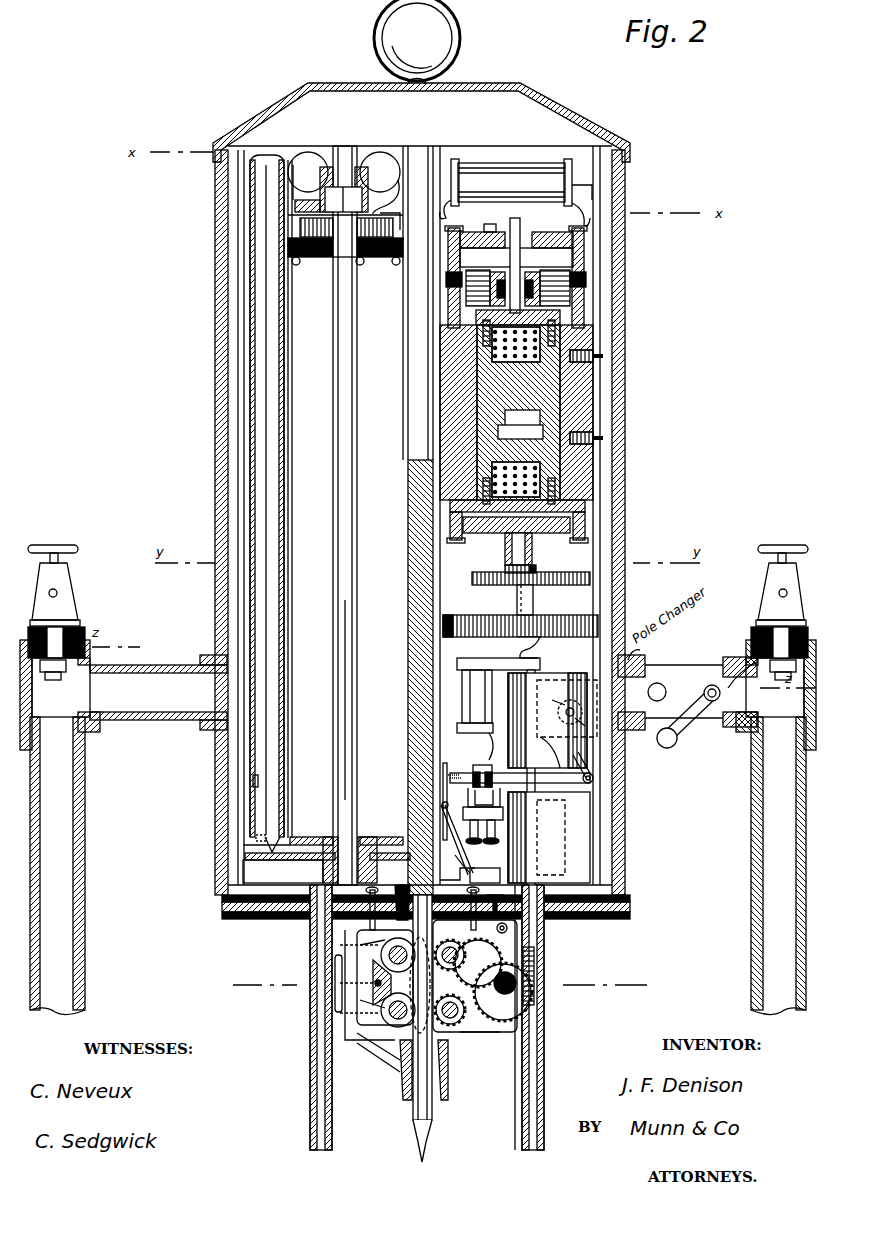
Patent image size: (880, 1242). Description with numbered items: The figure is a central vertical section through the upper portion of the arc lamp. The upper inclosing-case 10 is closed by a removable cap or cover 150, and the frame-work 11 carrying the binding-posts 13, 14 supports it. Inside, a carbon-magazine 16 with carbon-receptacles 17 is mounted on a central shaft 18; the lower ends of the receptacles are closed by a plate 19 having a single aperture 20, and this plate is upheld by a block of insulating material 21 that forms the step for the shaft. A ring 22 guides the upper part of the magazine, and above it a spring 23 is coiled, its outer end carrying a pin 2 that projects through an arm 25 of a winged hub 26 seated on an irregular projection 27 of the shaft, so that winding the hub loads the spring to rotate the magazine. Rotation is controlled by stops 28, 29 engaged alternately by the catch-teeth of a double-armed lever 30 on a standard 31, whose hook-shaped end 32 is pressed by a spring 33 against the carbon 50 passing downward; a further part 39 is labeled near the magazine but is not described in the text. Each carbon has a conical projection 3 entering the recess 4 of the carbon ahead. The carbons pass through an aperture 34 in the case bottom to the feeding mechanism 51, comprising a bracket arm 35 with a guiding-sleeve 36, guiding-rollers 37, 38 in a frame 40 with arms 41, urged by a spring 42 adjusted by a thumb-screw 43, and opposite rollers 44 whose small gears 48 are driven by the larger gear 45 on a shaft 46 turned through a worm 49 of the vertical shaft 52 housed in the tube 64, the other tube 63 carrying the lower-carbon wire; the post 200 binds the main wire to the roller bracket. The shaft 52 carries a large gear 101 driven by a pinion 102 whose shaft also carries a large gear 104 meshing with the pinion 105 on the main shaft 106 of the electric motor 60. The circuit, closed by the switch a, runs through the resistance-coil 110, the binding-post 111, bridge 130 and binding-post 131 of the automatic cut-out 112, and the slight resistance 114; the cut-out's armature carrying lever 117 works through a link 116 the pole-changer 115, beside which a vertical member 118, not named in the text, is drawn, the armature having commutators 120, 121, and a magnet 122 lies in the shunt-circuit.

The cap or cover 150 is at (411, 91).
The upper inclosing-case 10 is at (625, 302).
The carbon-magazine 16 is at (248, 404).
The recess 4 is at (268, 170).
The carbon-receptacles 17 is at (292, 482).
The central shaft 18 is at (367, 515).
The small gears 48 is at (343, 700).
The aperture 20 is at (380, 850).
The pin 2 is at (308, 176).
The winged hub 26 is at (380, 183).
The arm 25 is at (315, 200).
The projection 27 is at (344, 189).
The spring 23 is at (389, 213).
The binding-post 14 is at (364, 255).
The block of insulating material 21 is at (390, 257).
The resistance-coil 110 is at (516, 192).
The commutator 120 is at (516, 273).
The commutator 121 is at (518, 297).
The electric motor 60 is at (521, 412).
The pinion 105 is at (505, 568).
The main shaft of the motor 106 is at (537, 568).
The large gear 104 is at (478, 584).
The pinion 102 is at (517, 611).
The large gear 101 is at (483, 637).
The slight resistance 114 is at (475, 715).
The shaft 118 is at (527, 685).
The pole-changer 115 is at (575, 692).
The armature carrying lever 117 is at (520, 747).
The link 116 is at (572, 760).
The bridge 130 is at (493, 775).
The automatic cut-out 112 is at (483, 804).
The binding-post 131 is at (481, 840).
The binding-post 111 is at (500, 840).
The stop 29 is at (445, 765).
The spring 33 is at (461, 768).
The double-armed lever 30 is at (456, 797).
The standard 31 is at (489, 868).
The stop 28 is at (455, 862).
The hook-shaped end 32 is at (456, 873).
The magnet 122 is at (549, 837).
The projection 3 is at (326, 860).
The plate 19 is at (283, 848).
The ring 22 is at (256, 840).
The stop 39 is at (253, 778).
The carbon 50 is at (420, 811).
The aperture 34 is at (434, 911).
The vertical tube 63 is at (310, 1080).
The vertical tube 64 is at (545, 1082).
The vertical shaft 52 is at (538, 1046).
The thumb-screw 43 is at (360, 1032).
The arms 41 is at (372, 970).
The spring 42 is at (374, 980).
The guiding-roller 37 is at (398, 947).
The frame 40 is at (398, 1003).
The guiding-roller 38 is at (411, 986).
The rollers 44 is at (475, 984).
The larger gear 45 is at (478, 963).
The shaft 46 is at (503, 992).
The worm 49 is at (535, 960).
The post 200 is at (508, 928).
The bracket arm 35 is at (386, 1052).
The guiding-sleeve 36 is at (449, 1076).
The feeding mechanism 51 is at (481, 1037).
The frame-work 11 is at (85, 855).
The binding-post 13 is at (779, 600).
The switch a is at (687, 701).